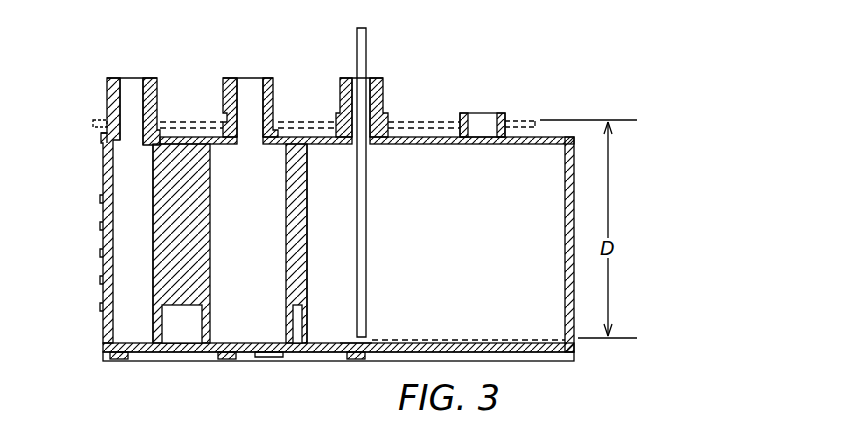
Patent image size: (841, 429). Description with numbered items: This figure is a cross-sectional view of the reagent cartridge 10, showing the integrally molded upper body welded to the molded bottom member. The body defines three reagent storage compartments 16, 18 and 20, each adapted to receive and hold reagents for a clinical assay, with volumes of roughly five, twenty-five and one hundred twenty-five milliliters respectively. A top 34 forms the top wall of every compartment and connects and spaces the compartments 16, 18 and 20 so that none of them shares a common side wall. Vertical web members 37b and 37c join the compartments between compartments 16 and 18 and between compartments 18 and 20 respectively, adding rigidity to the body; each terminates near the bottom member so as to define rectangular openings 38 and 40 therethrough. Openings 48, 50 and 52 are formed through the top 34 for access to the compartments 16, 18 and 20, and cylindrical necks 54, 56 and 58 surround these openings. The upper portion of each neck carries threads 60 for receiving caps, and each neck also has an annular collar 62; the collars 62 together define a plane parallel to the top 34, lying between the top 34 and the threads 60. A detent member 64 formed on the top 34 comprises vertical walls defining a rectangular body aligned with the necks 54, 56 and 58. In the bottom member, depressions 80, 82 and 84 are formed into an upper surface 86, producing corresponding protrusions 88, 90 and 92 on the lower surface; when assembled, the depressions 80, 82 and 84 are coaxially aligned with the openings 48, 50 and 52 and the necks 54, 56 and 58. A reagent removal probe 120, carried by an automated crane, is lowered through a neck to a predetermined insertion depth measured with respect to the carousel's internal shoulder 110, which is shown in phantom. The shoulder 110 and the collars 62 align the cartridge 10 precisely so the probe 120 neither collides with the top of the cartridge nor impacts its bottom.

The reagent cartridge 10 is at (433, 67).
The reagent storage compartment 16 is at (125, 242).
The reagent storage compartment 18 is at (259, 251).
The reagent storage compartment 20 is at (498, 229).
The top 34 is at (570, 133).
The vertical web member 37b is at (153, 214).
The vertical web member 37c is at (305, 240).
The rectangular opening 38 is at (195, 325).
The rectangular opening 40 is at (210, 218).
The opening 48 is at (132, 142).
The opening 50 is at (250, 145).
The opening 52 is at (368, 143).
The cylindrical neck 54 is at (102, 140).
The cylindrical neck 56 is at (223, 125).
The cylindrical neck 58 is at (388, 125).
The threads 60 is at (148, 95).
The annular collar 62 is at (105, 120).
The detent member 64 is at (508, 113).
The depression 80 is at (128, 345).
The depression 82 is at (247, 345).
The depression 84 is at (365, 343).
The upper surface 86 is at (485, 340).
The protrusion 88 is at (118, 359).
The protrusion 90 is at (233, 359).
The protrusion 92 is at (347, 359).
The internal shoulder 110 is at (535, 124).
The reagent removal probe 120 is at (357, 50).